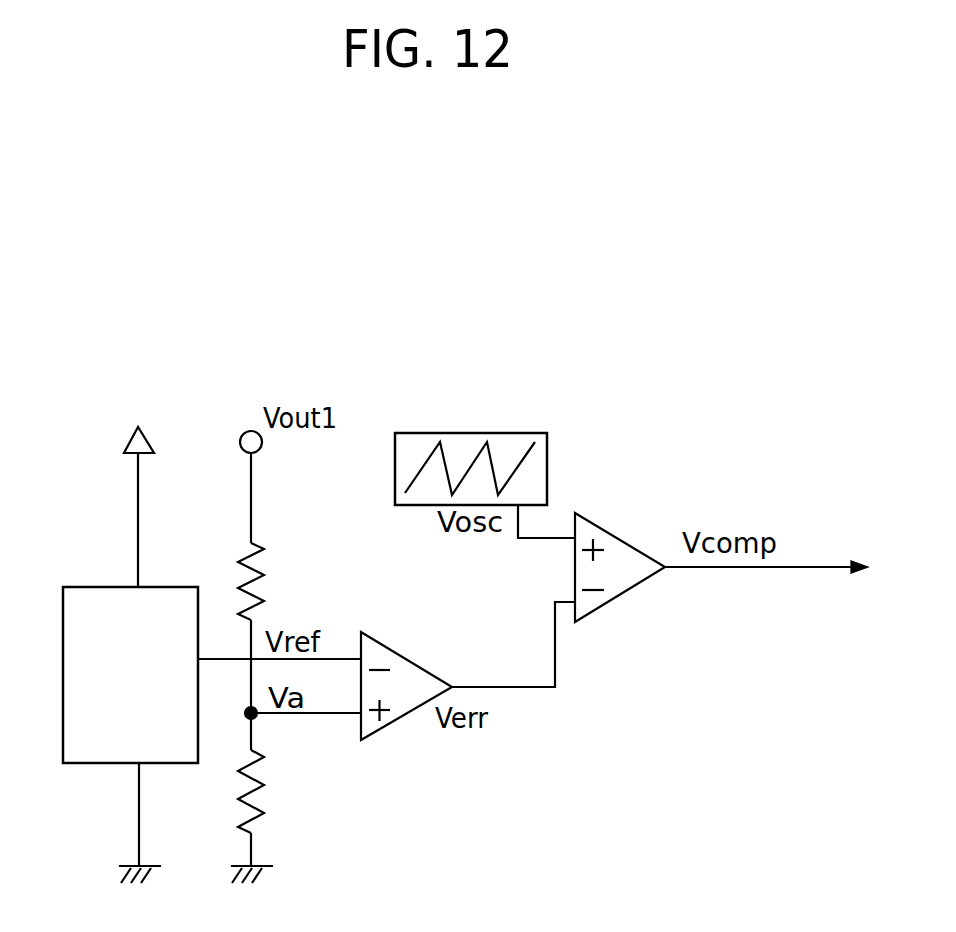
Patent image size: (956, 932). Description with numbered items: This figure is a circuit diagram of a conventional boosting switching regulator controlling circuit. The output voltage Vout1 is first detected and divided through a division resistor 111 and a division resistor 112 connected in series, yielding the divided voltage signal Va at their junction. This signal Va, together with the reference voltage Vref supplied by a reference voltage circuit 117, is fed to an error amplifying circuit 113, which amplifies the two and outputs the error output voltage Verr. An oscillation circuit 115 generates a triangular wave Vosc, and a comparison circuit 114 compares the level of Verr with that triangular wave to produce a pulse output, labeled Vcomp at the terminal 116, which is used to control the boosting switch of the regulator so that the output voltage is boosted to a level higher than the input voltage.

The division resistor 111 is at (272, 577).
The division resistor 112 is at (272, 803).
The error amplifying circuit 113 is at (400, 717).
The comparison circuit 114 is at (617, 598).
The oscillation circuit 115 is at (547, 463).
The output terminal 116 is at (793, 565).
The reference voltage circuit 117 is at (110, 585).